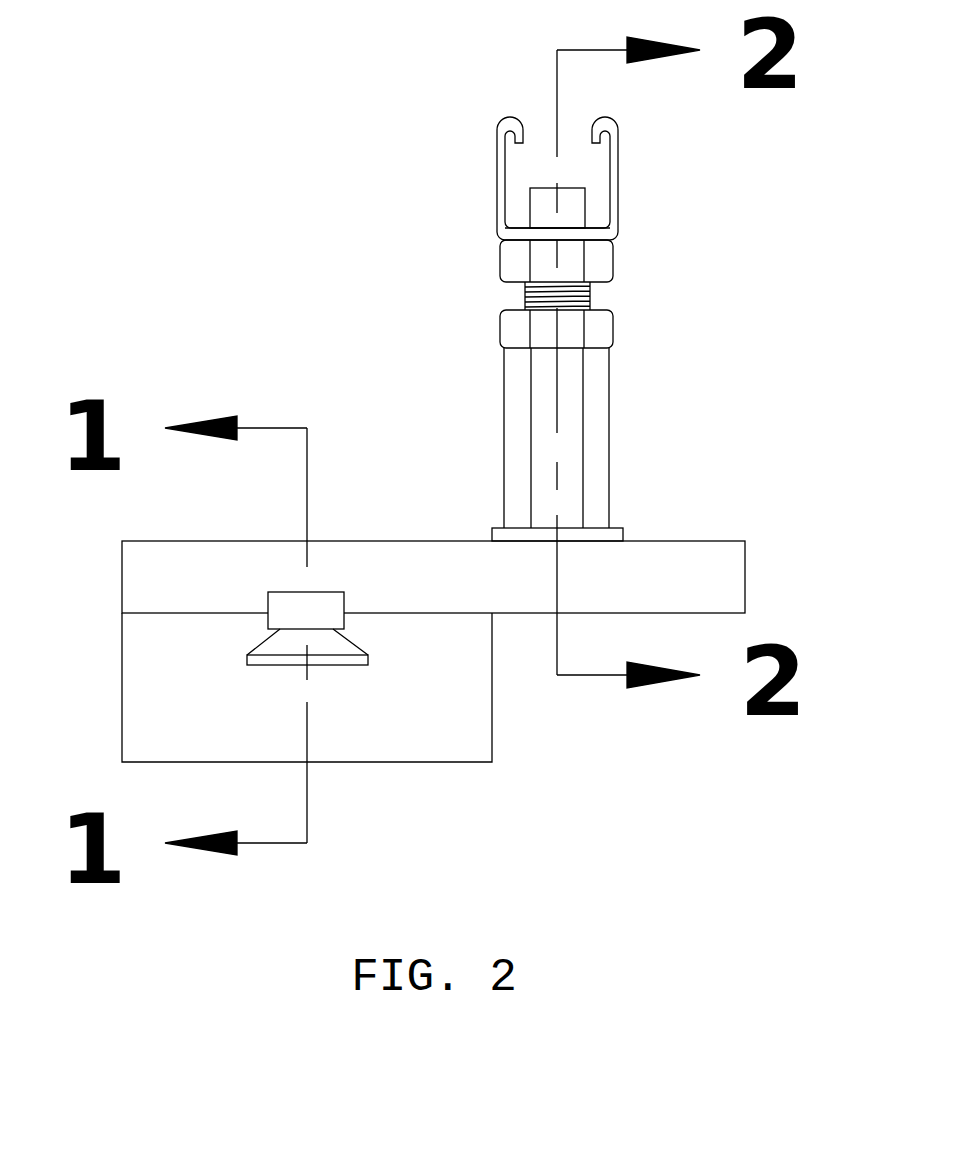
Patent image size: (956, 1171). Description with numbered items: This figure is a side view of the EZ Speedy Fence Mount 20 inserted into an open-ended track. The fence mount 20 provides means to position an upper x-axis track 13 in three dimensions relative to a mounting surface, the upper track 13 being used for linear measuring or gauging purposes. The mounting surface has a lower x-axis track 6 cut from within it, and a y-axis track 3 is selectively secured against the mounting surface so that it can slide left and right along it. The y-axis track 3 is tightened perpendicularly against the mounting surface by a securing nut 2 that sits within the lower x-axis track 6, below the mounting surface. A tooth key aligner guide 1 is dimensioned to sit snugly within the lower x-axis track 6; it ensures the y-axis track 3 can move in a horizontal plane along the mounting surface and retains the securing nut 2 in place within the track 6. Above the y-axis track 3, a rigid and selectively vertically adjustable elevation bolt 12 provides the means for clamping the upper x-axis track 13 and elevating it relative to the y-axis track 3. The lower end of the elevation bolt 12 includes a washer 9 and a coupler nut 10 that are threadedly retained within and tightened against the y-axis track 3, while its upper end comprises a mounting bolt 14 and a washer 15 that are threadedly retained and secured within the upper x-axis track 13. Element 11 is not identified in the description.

The tooth key aligner guide 1 is at (327, 612).
The securing nut 2 is at (340, 660).
The y-axis track 3 is at (443, 587).
The lower x-axis track 6 is at (340, 690).
The washer 9 is at (513, 538).
The coupler nut 10 is at (540, 462).
The lower nut 11 is at (547, 328).
The elevation bolt 12 is at (547, 263).
The upper x-axis track 13 is at (498, 203).
The mounting bolt 14 is at (550, 208).
The washer 15 is at (587, 232).
The EZ Speedy Fence Mount 20 is at (358, 393).